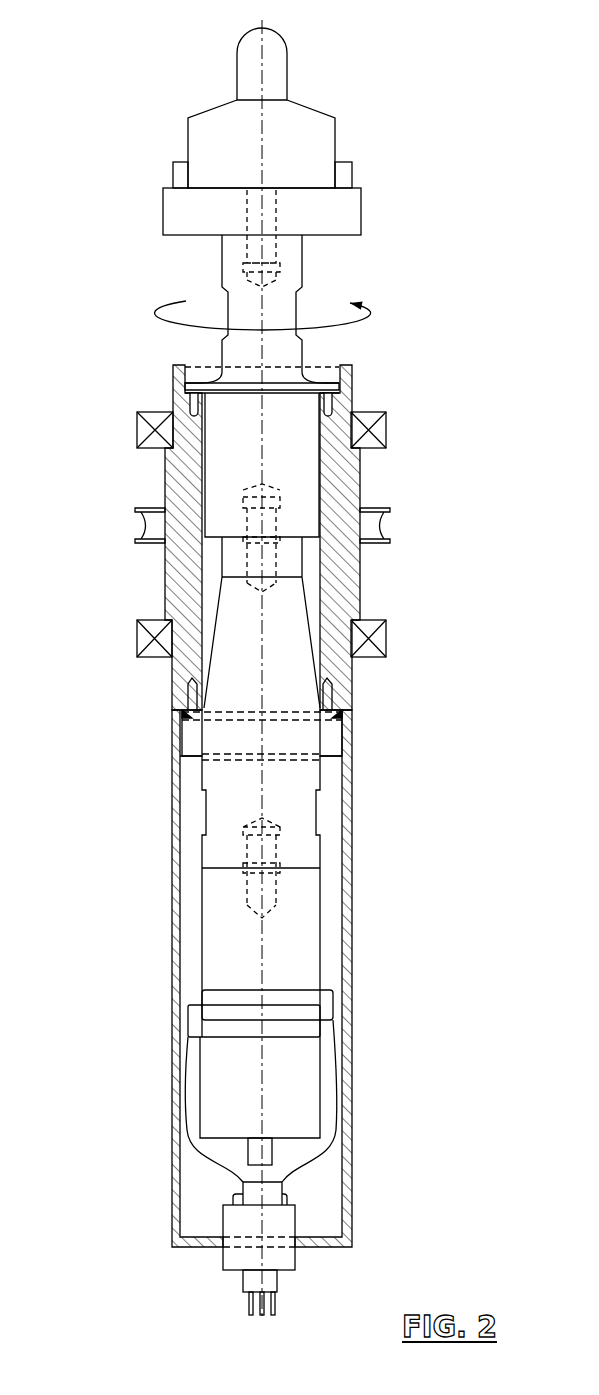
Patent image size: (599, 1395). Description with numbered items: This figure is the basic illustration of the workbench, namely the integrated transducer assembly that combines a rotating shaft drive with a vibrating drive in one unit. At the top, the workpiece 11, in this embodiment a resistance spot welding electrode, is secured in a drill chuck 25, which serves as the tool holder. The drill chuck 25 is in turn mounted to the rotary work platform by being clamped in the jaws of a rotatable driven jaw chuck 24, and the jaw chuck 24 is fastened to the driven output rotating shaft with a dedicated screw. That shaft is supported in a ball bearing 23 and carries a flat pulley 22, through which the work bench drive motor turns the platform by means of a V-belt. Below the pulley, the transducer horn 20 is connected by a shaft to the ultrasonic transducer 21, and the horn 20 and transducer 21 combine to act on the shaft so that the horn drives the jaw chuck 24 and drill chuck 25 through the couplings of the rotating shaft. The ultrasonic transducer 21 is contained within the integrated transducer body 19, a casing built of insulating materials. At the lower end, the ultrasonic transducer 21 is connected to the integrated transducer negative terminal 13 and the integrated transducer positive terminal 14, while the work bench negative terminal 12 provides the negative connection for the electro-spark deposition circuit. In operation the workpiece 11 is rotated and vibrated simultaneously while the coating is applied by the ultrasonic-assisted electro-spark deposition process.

The workpiece 11 is at (228, 45).
The drill chuck 25 is at (333, 108).
The jaw chuck 24 is at (158, 213).
The ball bearing 23 is at (128, 443).
The flat pulley 22 is at (392, 548).
The ultrasonic transducer 21 is at (280, 823).
The transducer horn 20 is at (297, 1090).
The integrated transducer body 19 is at (170, 1178).
The work bench negative terminal 12 is at (248, 1308).
The integrated transducer negative terminal 13 is at (262, 1316).
The integrated transducer positive terminal 14 is at (276, 1308).